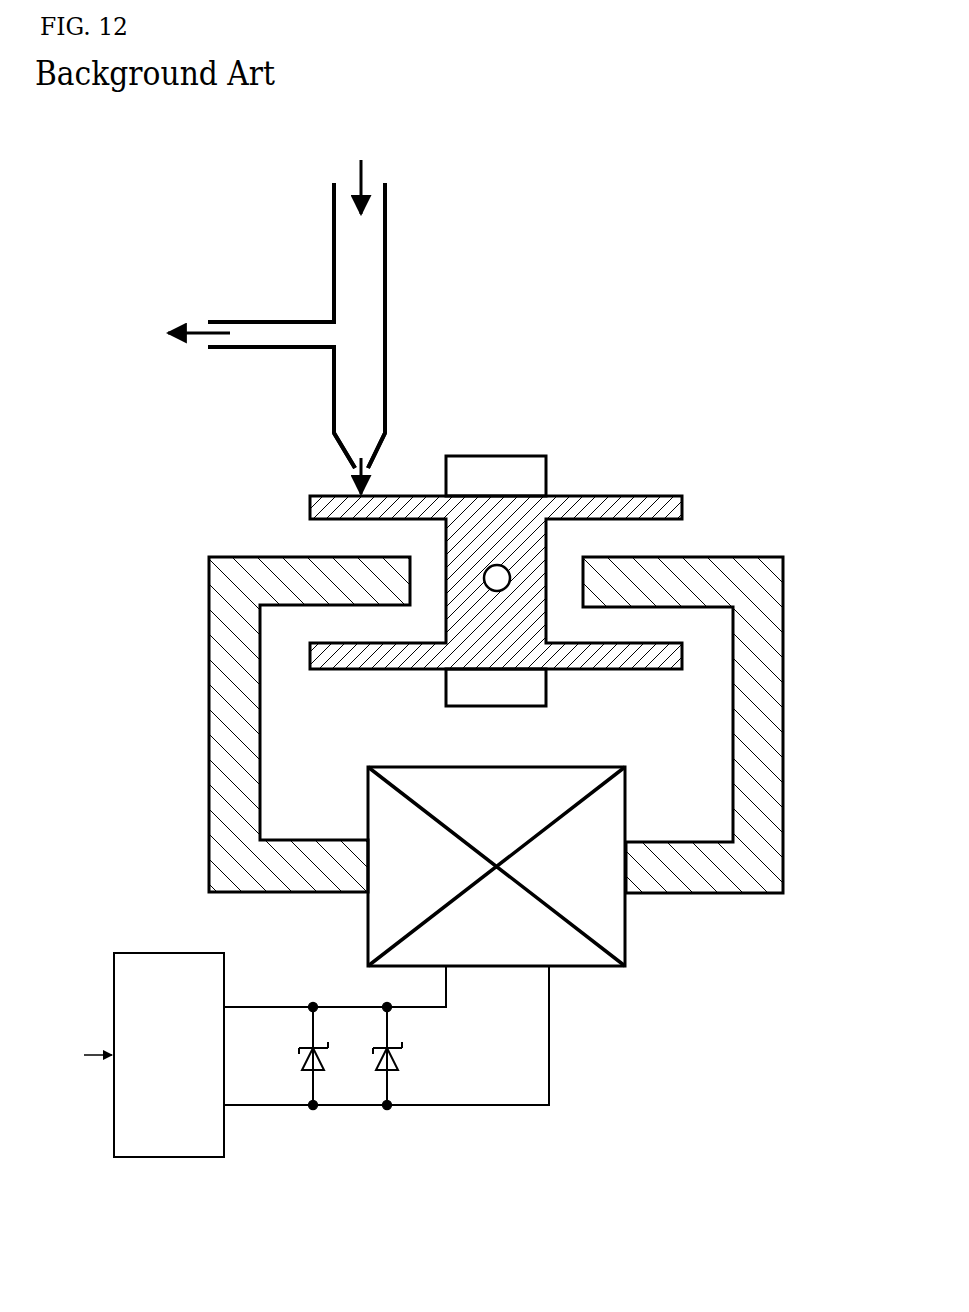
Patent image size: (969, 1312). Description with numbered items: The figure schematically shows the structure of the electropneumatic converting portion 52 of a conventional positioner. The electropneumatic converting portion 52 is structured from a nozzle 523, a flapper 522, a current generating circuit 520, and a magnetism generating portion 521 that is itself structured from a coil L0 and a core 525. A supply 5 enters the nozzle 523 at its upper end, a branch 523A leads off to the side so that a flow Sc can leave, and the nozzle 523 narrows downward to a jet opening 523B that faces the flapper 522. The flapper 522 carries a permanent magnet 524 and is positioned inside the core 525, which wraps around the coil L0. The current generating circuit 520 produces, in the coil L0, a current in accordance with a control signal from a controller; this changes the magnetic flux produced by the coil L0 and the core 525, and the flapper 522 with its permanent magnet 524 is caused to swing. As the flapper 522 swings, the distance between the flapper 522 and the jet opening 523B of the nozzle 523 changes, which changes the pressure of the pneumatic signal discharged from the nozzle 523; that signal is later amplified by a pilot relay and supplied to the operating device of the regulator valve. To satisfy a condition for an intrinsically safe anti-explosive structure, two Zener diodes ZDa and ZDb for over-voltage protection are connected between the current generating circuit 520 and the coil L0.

The electropneumatic converting portion 52 is at (766, 100).
The fuel 5 is at (359, 173).
The nozzle 523 is at (386, 272).
The branch passage 523A is at (212, 322).
The jet opening 523B is at (355, 464).
The return flow Sc is at (183, 334).
The magnetism generating portion 521 is at (785, 1163).
The flapper 522 is at (682, 496).
The permanent magnet 524 is at (546, 457).
The core 525 is at (228, 557).
The coil L0 is at (368, 926).
The current generating circuit 520 is at (150, 953).
The Zener diode ZDa is at (373, 1056).
The Zener diode ZDb is at (300, 1056).